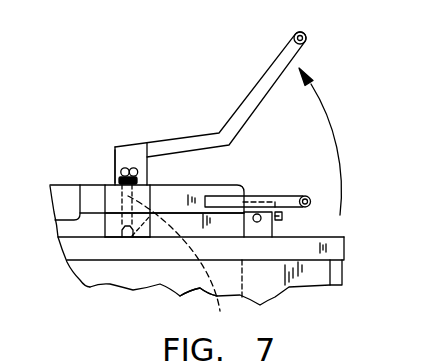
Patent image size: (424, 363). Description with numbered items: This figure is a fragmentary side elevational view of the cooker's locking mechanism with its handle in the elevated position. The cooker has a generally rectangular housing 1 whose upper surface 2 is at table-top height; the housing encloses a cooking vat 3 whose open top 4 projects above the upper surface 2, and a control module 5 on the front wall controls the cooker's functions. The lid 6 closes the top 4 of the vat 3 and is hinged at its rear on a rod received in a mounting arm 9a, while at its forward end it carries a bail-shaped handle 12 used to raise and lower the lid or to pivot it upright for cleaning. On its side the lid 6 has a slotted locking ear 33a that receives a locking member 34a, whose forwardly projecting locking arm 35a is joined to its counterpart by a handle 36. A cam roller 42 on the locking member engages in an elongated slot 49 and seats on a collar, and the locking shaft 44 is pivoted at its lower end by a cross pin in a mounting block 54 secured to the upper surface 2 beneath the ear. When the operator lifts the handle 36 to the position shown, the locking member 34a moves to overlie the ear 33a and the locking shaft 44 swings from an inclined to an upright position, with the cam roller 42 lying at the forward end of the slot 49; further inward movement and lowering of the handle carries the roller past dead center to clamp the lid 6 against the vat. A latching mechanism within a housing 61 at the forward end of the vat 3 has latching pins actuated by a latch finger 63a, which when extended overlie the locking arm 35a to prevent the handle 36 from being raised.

The housing 1 is at (290, 292).
The upper surface 2 is at (344, 246).
The cooking vat 3 is at (197, 290).
The open top 4 is at (215, 232).
The control module 5 is at (344, 273).
The lid 6 is at (192, 187).
The mounting arm 9a is at (60, 196).
The bail-shaped handle 12 is at (308, 197).
The slotted locking ear 33a is at (108, 186).
The locking member 34a is at (129, 136).
The locking arm 35a is at (255, 92).
The handle 36 is at (306, 34).
The cam roller 42 is at (149, 166).
The locking shaft 44 is at (179, 266).
The elongated slot 49 is at (118, 163).
The mounting block 54 is at (113, 232).
The housing 61 is at (263, 196).
The latch finger 63a is at (283, 218).